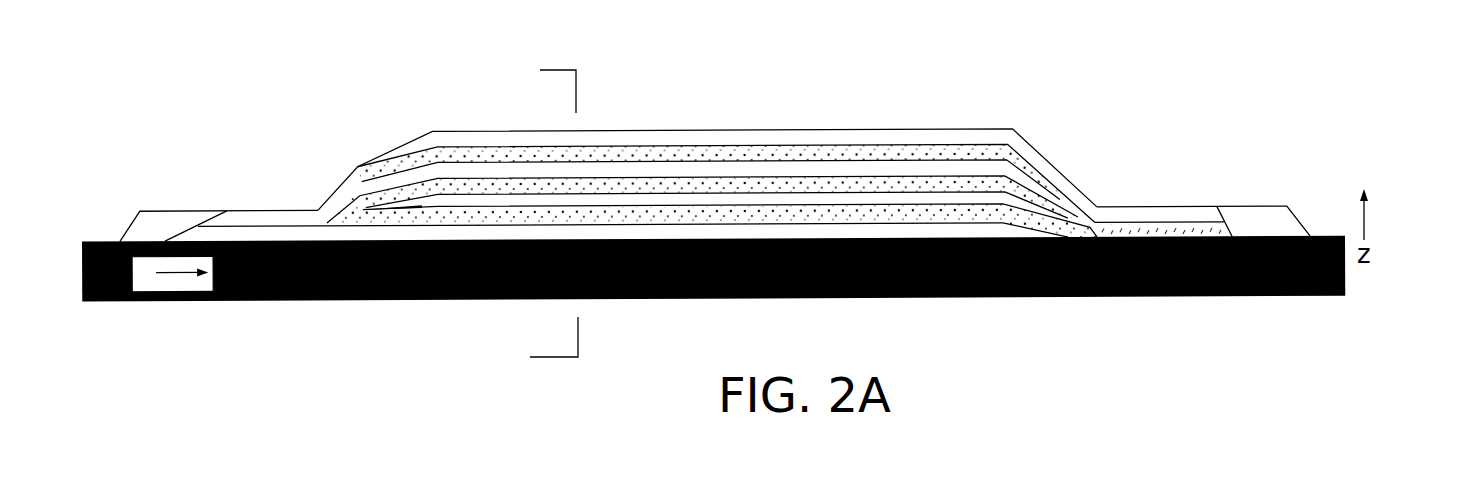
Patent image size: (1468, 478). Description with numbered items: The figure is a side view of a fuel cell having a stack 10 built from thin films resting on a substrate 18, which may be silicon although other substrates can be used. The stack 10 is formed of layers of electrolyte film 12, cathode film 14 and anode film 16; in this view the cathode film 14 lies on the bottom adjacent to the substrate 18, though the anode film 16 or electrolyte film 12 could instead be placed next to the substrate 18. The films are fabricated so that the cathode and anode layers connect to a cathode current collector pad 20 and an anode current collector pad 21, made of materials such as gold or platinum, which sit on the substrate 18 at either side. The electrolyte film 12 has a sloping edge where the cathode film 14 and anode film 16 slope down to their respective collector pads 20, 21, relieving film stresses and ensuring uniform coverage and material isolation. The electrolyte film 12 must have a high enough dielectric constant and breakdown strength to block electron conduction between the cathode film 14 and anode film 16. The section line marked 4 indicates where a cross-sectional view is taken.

The thin film capacitor device 10 is at (1101, 133).
The electrode layer 12 is at (833, 152).
The dielectric layer 14 is at (922, 170).
The cap / passivation layer 16 is at (987, 133).
The substrate 18 is at (1347, 285).
The left contact pad 20 is at (158, 218).
The right contact pad 21 is at (1253, 210).
The section line 4- 4 is at (540, 210).